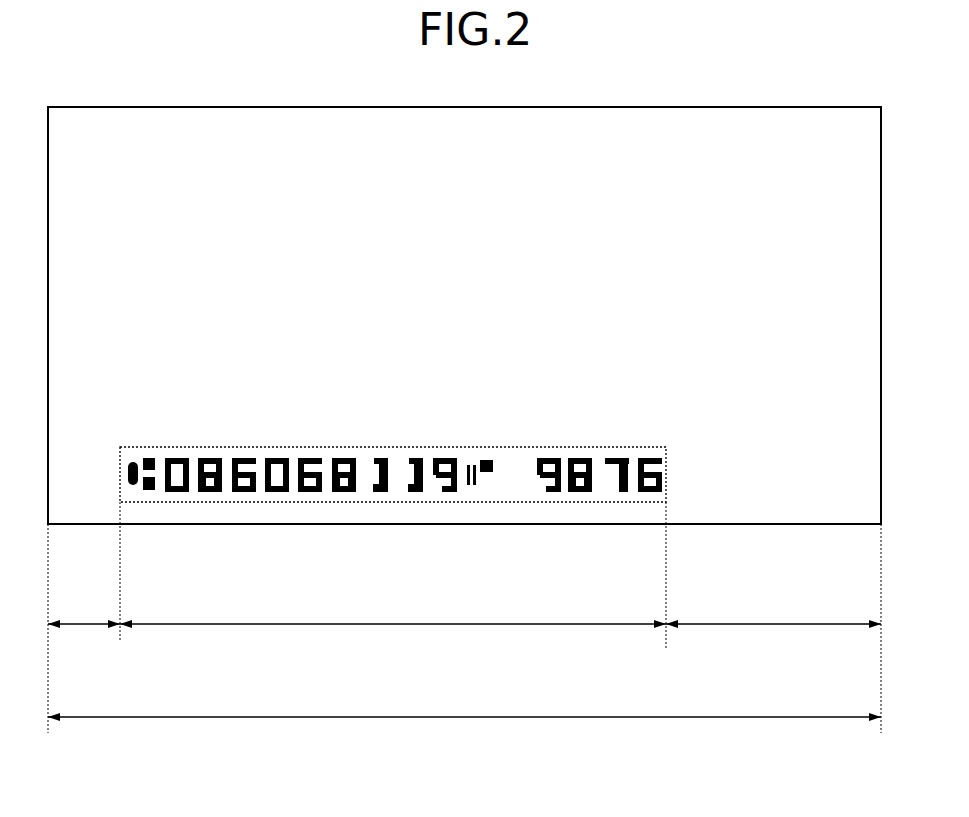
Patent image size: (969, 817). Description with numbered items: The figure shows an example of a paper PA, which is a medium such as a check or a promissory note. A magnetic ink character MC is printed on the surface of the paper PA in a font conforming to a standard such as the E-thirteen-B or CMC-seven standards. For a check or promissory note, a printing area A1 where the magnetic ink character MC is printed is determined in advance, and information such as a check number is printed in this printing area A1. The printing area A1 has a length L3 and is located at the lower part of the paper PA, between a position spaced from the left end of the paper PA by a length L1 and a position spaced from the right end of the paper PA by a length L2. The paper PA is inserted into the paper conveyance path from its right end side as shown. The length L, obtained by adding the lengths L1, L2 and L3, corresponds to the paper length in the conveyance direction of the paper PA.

The paper PA is at (795, 107).
The printing area A1 is at (270, 446).
The magnetic ink character MC is at (397, 463).
The length L1 is at (84, 617).
The length L2 is at (773, 628).
The length L3 is at (393, 578).
The length L is at (464, 730).